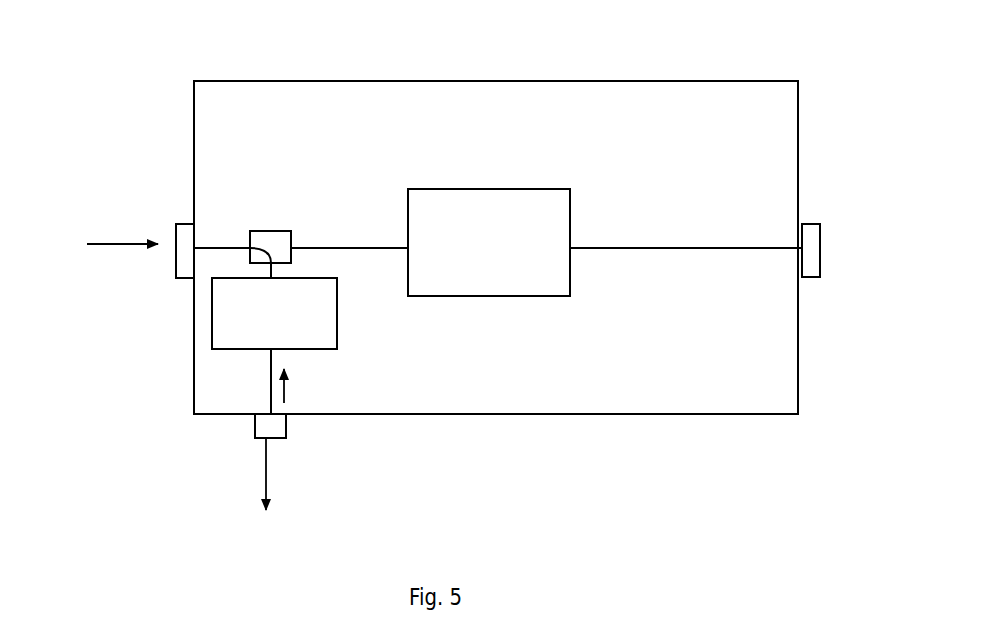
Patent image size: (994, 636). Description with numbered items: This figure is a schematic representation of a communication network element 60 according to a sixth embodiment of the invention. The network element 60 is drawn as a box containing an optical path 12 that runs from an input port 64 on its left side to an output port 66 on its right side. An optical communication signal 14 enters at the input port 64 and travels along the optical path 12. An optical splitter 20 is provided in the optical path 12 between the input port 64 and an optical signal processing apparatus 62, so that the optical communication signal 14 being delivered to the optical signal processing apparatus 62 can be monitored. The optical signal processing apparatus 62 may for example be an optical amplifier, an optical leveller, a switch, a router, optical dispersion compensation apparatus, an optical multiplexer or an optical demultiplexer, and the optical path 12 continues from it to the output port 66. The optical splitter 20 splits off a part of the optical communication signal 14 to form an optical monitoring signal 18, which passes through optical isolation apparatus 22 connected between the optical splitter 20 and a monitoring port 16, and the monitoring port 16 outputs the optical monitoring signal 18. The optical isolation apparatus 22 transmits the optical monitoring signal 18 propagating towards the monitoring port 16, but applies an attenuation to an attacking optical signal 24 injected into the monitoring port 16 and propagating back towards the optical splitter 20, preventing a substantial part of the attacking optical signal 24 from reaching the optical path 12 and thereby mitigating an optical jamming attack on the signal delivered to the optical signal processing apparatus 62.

The communication network element 60 is at (693, 118).
The optical signal processing apparatus 62 is at (497, 188).
The optical path 12 is at (607, 316).
The optical splitter 20 is at (266, 242).
The optical isolation apparatus 22 is at (215, 351).
The input port 64 is at (160, 276).
The output port 66 is at (820, 262).
The monitoring port 16 is at (266, 420).
The optical communication signal 14 is at (104, 245).
The optical monitoring signal 18 is at (260, 491).
The attacking optical signal 24 is at (284, 385).